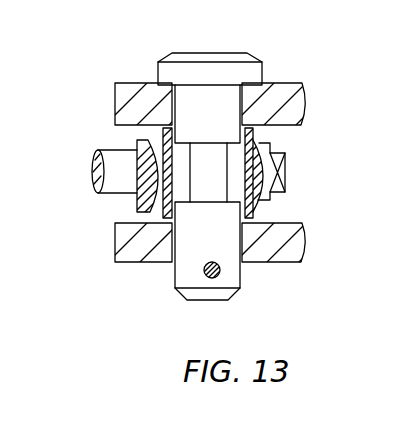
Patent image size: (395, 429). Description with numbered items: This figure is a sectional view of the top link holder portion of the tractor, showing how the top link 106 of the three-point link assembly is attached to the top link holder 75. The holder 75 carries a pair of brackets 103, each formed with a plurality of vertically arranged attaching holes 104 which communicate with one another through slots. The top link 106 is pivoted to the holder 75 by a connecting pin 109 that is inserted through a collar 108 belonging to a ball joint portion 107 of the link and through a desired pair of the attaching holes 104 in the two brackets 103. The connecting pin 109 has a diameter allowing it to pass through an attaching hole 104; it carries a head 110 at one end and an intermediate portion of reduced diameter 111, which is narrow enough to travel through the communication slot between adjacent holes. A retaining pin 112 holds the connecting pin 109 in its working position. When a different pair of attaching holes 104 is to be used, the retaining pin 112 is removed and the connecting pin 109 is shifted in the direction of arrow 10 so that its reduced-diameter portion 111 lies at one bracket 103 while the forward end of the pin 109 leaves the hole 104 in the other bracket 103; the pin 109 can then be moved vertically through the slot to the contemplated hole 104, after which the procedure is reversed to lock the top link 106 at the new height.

The direction arrow 10 is at (210, 54).
The top link holder 75 is at (279, 84).
The bracket 103 is at (125, 103).
The attaching hole 104 is at (172, 110).
The top link 106 is at (110, 177).
The ball joint portion 107 is at (262, 163).
The collar 108 is at (148, 195).
The connecting pin 109 is at (222, 243).
The head 110 is at (232, 78).
The reduced-diameter intermediate portion 111 is at (210, 188).
The retaining pin 112 is at (215, 278).